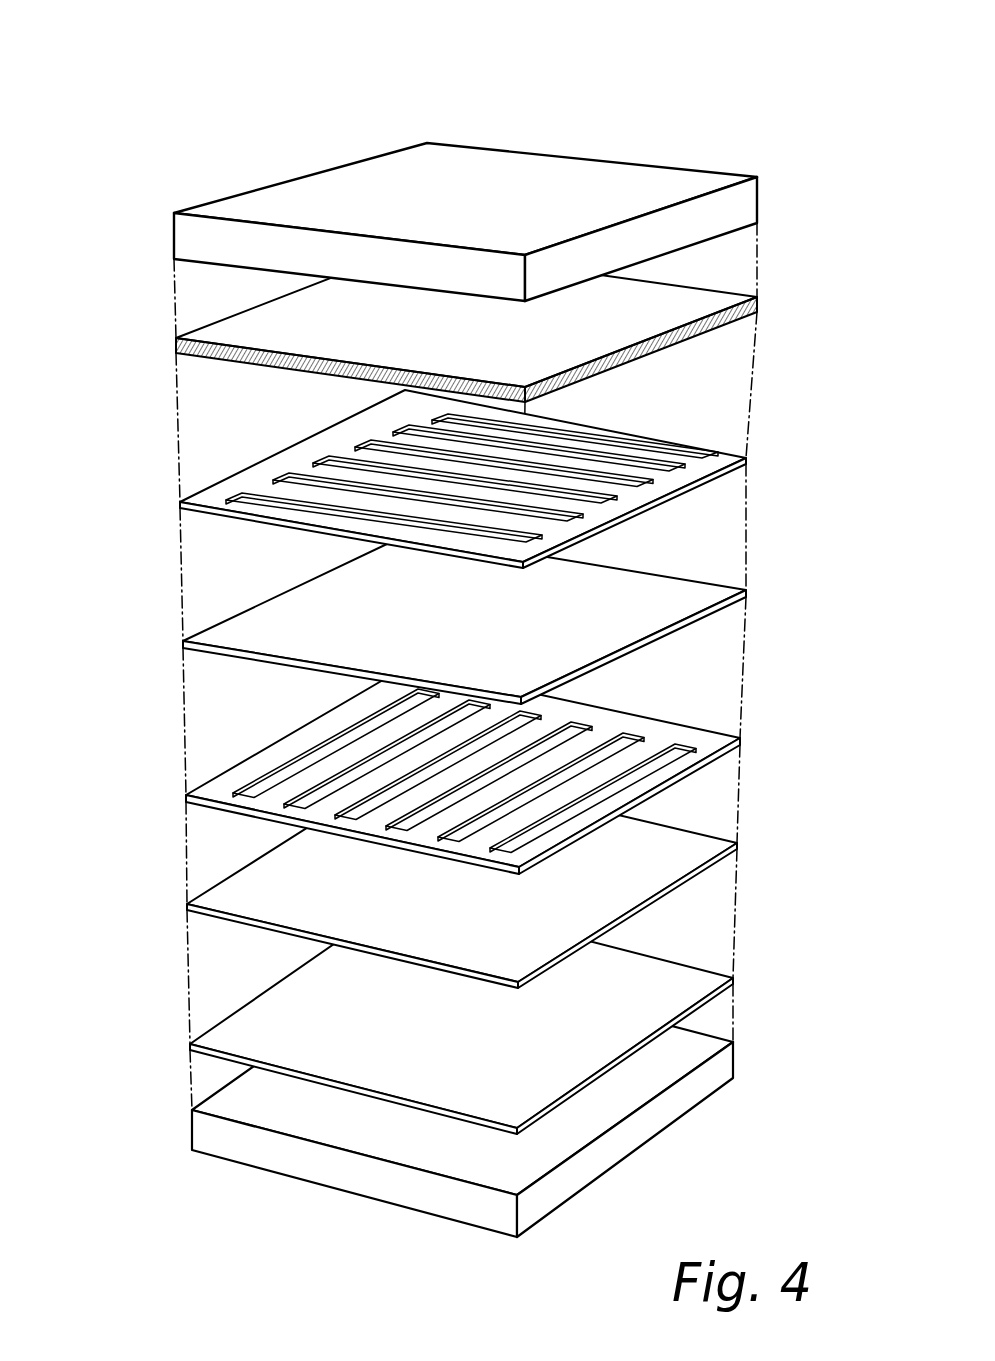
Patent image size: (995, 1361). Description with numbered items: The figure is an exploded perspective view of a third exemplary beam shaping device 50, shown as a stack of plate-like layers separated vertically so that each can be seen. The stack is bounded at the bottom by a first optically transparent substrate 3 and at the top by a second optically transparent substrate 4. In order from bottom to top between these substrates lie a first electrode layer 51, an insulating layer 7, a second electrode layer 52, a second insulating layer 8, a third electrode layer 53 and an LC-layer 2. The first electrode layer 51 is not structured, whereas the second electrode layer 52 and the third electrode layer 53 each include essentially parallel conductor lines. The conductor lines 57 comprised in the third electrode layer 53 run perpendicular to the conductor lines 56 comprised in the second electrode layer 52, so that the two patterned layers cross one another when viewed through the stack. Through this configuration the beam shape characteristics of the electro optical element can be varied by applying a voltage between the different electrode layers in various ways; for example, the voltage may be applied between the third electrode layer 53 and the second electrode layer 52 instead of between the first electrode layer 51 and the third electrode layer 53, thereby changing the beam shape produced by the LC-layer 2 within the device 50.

The beam shaping device 50 is at (172, 87).
The second optically transparent substrate 4 is at (750, 200).
The LC-layer 2 is at (755, 305).
The third electrode layer 53 is at (747, 458).
The conductor lines 57 is at (647, 463).
The second insulating layer 8 is at (720, 611).
The conductor lines 56 is at (657, 737).
The second electrode layer 52 is at (707, 750).
The insulating layer 7 is at (713, 863).
The first electrode layer 51 is at (708, 983).
The first optically transparent substrate 3 is at (713, 1070).